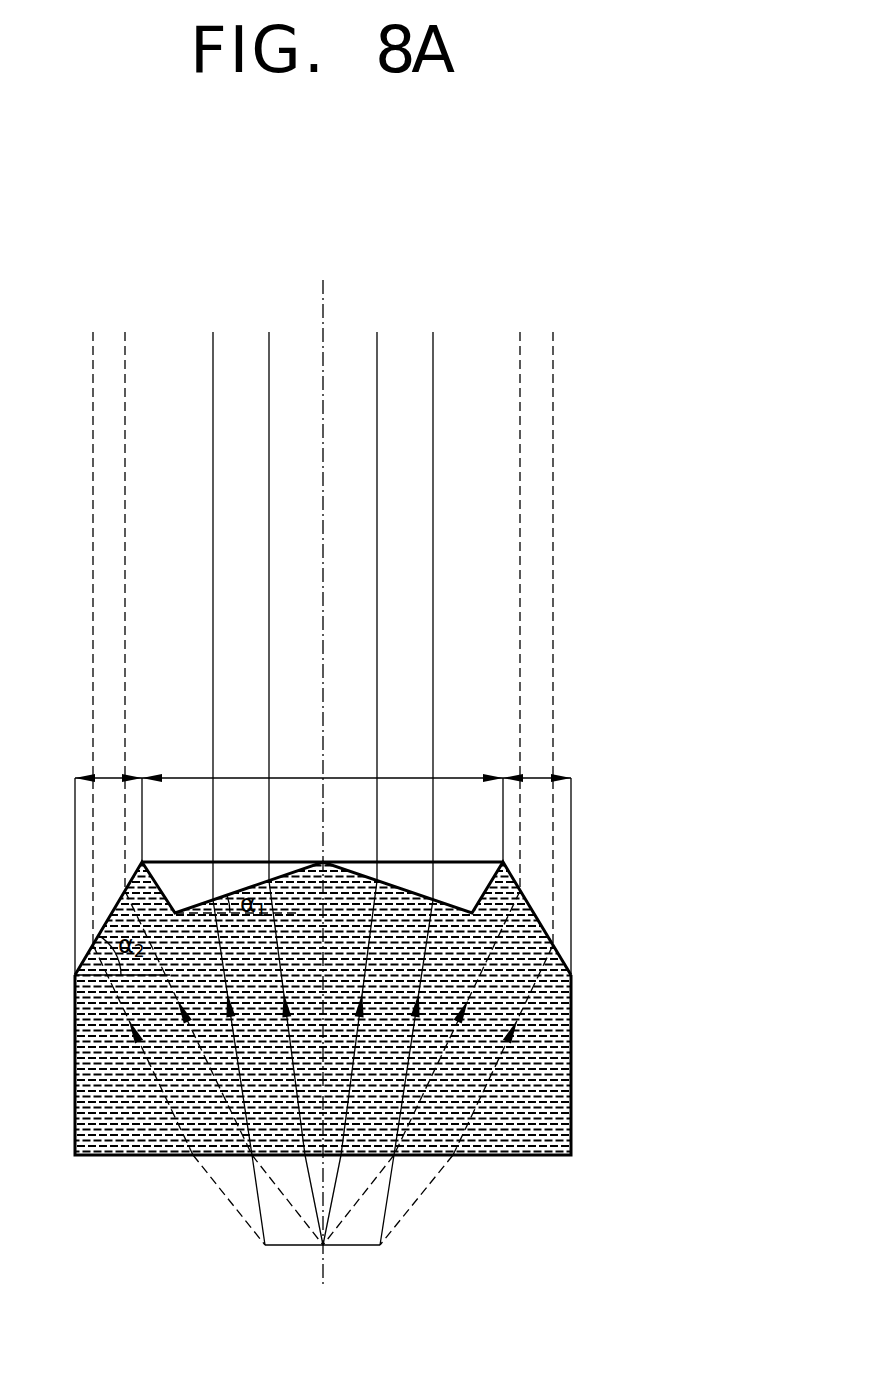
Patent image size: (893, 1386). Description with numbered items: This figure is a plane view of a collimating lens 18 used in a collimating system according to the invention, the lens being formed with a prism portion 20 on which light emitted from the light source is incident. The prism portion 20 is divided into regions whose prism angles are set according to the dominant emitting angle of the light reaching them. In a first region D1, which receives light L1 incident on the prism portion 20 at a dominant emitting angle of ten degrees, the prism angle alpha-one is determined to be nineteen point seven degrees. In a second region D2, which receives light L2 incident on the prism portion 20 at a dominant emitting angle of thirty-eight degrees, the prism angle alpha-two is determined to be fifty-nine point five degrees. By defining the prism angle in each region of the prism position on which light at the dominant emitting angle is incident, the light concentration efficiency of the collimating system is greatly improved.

The lens / light guide body 18 is at (612, 898).
The prism portion 20 is at (110, 918).
The light L1 is at (323, 788).
The light L2 is at (323, 788).
The first region D1 is at (322, 801).
The second region D2 is at (323, 858).